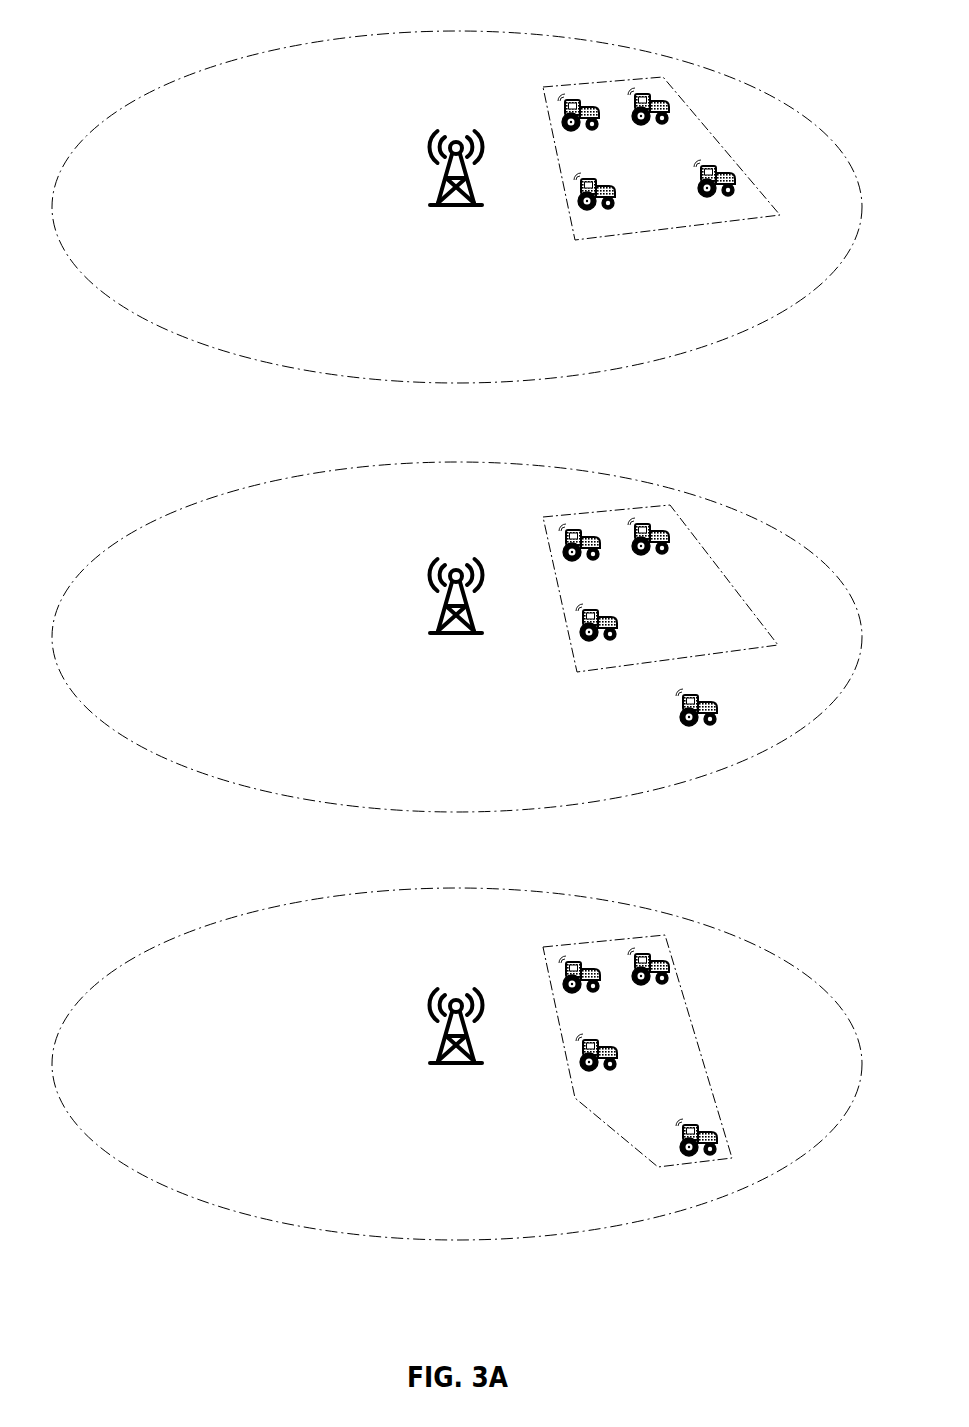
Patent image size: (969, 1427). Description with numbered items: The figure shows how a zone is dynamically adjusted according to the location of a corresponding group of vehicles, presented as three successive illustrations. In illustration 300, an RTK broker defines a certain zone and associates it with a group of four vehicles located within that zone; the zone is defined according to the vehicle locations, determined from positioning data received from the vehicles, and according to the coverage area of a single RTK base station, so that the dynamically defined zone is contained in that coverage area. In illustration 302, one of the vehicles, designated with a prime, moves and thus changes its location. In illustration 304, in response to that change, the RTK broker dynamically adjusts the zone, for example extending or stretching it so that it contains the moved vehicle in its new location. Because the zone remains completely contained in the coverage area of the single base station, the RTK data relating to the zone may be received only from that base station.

The illustration 300 is at (784, 58).
The illustration 302 is at (784, 487).
The illustration 304 is at (784, 918).